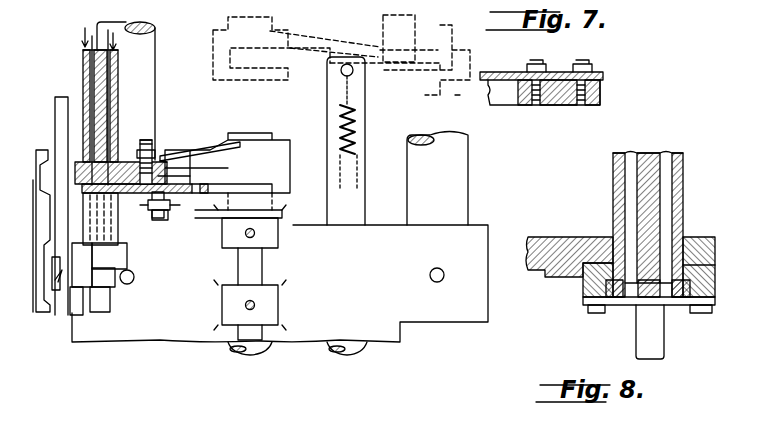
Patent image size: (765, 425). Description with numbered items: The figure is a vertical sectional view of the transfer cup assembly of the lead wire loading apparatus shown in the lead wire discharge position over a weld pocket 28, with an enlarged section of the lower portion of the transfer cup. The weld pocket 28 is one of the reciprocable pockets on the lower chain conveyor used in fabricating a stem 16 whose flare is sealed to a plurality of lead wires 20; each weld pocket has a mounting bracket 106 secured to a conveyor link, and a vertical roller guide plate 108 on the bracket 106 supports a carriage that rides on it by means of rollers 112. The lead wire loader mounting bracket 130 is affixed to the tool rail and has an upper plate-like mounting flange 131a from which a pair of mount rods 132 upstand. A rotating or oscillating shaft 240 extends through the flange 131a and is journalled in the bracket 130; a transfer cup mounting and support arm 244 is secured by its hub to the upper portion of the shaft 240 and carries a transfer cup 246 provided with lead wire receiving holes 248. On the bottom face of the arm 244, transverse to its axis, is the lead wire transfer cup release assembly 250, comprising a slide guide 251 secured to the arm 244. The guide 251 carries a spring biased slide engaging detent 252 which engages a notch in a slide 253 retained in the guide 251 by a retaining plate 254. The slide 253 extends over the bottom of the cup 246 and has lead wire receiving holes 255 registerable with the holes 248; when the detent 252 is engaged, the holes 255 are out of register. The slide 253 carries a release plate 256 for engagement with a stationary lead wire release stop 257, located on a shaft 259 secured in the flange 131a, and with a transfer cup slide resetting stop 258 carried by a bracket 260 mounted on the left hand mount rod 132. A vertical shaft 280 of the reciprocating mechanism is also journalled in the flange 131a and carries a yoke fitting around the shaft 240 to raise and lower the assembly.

In FIG. 7, the stem 16 is at (170, 142).
In FIG. 7, the lead wires 20 is at (92, 95).
In FIG. 7, the weld pocket 28 is at (112, 214).
In FIG. 7, the mounting bracket 106 is at (44, 315).
In FIG. 7, the vertical roller guide plate 108 is at (66, 316).
In FIG. 7, the rollers 112 is at (66, 284).
In FIG. 7, the lead wire loader mounting bracket 130 is at (408, 325).
In FIG. 7, the upper plate-like mounting flange 131a is at (478, 325).
In FIG. 7, the mount rods 132 is at (468, 163).
In FIG. 7, the rotating or oscillating shaft 240 is at (272, 200).
In FIG. 7, the transfer cup mounting and support arm 244 is at (278, 140).
In FIG. 8, the transfer cup mounting and support arm 244 is at (552, 245).
In FIG. 7, the transfer cup 246 is at (82, 56).
In FIG. 8, the transfer cup 246 is at (612, 170).
In FIG. 7, the lead wire receiving holes 248 is at (102, 78).
In FIG. 8, the lead wire receiving holes 248 is at (663, 160).
In FIG. 7, the lead wire transfer cup release assembly 250 is at (158, 210).
In FIG. 8, the lead wire transfer cup release assembly 250 is at (578, 310).
In FIG. 7, the slide guide 251 is at (168, 175).
In FIG. 8, the slide guide 251 is at (583, 282).
In FIG. 7, the spring biased slide engaging detent 252 is at (146, 140).
In FIG. 7, the slide 253 is at (196, 186).
In FIG. 8, the slide 253 is at (614, 298).
In FIG. 8, the retaining plate 254 is at (675, 300).
In FIG. 8, the lead wire receiving holes 255 is at (668, 285).
In FIG. 7, the release plate 256 is at (203, 235).
In FIG. 8, the release plate 256 is at (658, 350).
In FIG. 7, the lead wire release stop 257 is at (276, 216).
In FIG. 7, the transfer cup slide resetting stop 258 is at (603, 75).
In FIG. 7, the shaft 259 is at (258, 272).
In FIG. 7, the bracket 260 is at (510, 97).
In FIG. 7, the vertical shaft 280 is at (360, 203).